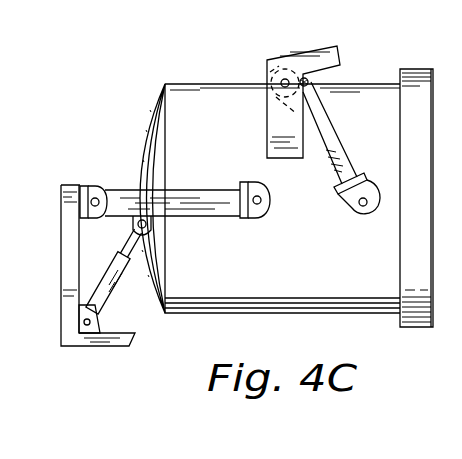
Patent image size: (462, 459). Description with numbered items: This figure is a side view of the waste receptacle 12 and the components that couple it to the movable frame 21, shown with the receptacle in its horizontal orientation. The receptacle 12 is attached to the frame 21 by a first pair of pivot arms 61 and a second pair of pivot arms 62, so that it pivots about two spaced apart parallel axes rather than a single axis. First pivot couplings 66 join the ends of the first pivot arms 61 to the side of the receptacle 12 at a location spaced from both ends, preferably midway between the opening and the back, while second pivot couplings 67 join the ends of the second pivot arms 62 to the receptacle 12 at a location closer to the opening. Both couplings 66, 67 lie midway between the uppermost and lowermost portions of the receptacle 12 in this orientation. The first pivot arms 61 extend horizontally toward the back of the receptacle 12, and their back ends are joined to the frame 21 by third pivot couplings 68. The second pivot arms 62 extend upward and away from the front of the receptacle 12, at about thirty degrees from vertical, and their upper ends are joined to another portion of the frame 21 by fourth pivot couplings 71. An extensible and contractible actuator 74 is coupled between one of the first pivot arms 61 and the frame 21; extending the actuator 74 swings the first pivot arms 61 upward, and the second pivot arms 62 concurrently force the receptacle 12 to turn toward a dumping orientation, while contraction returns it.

The receptacle 12 is at (223, 256).
The movable frame 21 is at (340, 63).
The first pivot arms 61 is at (184, 190).
The second pivot arms 62 is at (330, 124).
The first pivot couplings 66 is at (268, 212).
The second pivot couplings 67 is at (354, 217).
The third pivot couplings 68 is at (114, 186).
The fourth pivot couplings 71 is at (276, 80).
The actuator 74 is at (108, 298).